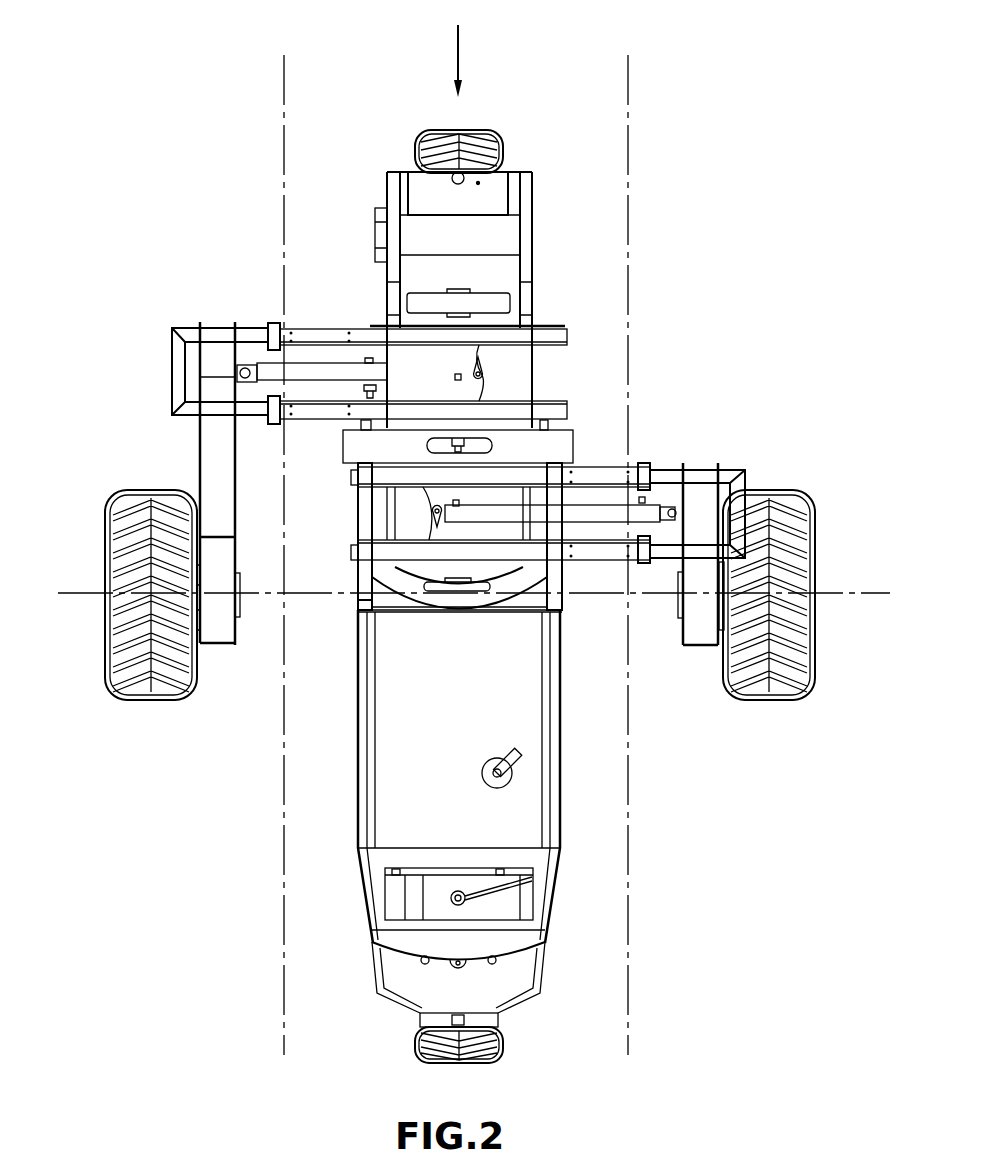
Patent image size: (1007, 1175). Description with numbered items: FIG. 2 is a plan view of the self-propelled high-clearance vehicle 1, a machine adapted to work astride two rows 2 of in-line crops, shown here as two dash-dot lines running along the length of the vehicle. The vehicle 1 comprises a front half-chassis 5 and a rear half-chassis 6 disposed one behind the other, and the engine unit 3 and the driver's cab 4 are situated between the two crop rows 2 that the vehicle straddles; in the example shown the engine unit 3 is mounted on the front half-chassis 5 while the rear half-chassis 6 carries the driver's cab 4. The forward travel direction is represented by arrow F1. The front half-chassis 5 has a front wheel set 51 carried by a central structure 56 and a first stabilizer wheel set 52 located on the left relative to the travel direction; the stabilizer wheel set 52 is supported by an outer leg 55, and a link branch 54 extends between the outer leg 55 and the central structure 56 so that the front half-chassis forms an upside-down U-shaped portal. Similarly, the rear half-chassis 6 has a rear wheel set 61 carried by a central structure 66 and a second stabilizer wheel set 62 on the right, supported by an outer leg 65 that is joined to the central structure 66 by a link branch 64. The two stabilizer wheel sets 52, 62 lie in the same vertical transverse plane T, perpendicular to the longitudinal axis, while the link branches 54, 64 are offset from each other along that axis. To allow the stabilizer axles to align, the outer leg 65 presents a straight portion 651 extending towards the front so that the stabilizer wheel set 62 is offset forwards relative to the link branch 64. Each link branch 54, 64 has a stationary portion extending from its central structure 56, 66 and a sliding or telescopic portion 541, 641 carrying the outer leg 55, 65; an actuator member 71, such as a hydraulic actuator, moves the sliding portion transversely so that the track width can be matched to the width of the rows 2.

The self-propelled high-clearance vehicle 1 is at (205, 238).
The crop rows 2 is at (284, 985).
The engine unit 3 is at (469, 722).
The driver's cab 4 is at (335, 530).
The front half-chassis 5 is at (657, 716).
The rear half-chassis 6 is at (337, 257).
The front wheel set 51 is at (420, 1052).
The first stabilizer wheel set 52 is at (770, 700).
The link branch 54 is at (600, 480).
The sliding portion 541 is at (700, 478).
The outer leg 55 is at (695, 633).
The central structure 56 is at (362, 607).
The rear wheel set 61 is at (480, 132).
The second stabilizer wheel set 62 is at (103, 653).
The link branch 64 is at (315, 410).
The sliding portion 641 is at (218, 337).
The outer leg 65 is at (177, 474).
The straight portion 651 is at (213, 438).
The central structure 66 is at (528, 242).
The actuator member 71 is at (507, 513).
The forward travel direction arrow F1 is at (462, 38).
The vertical transverse plane T is at (868, 592).